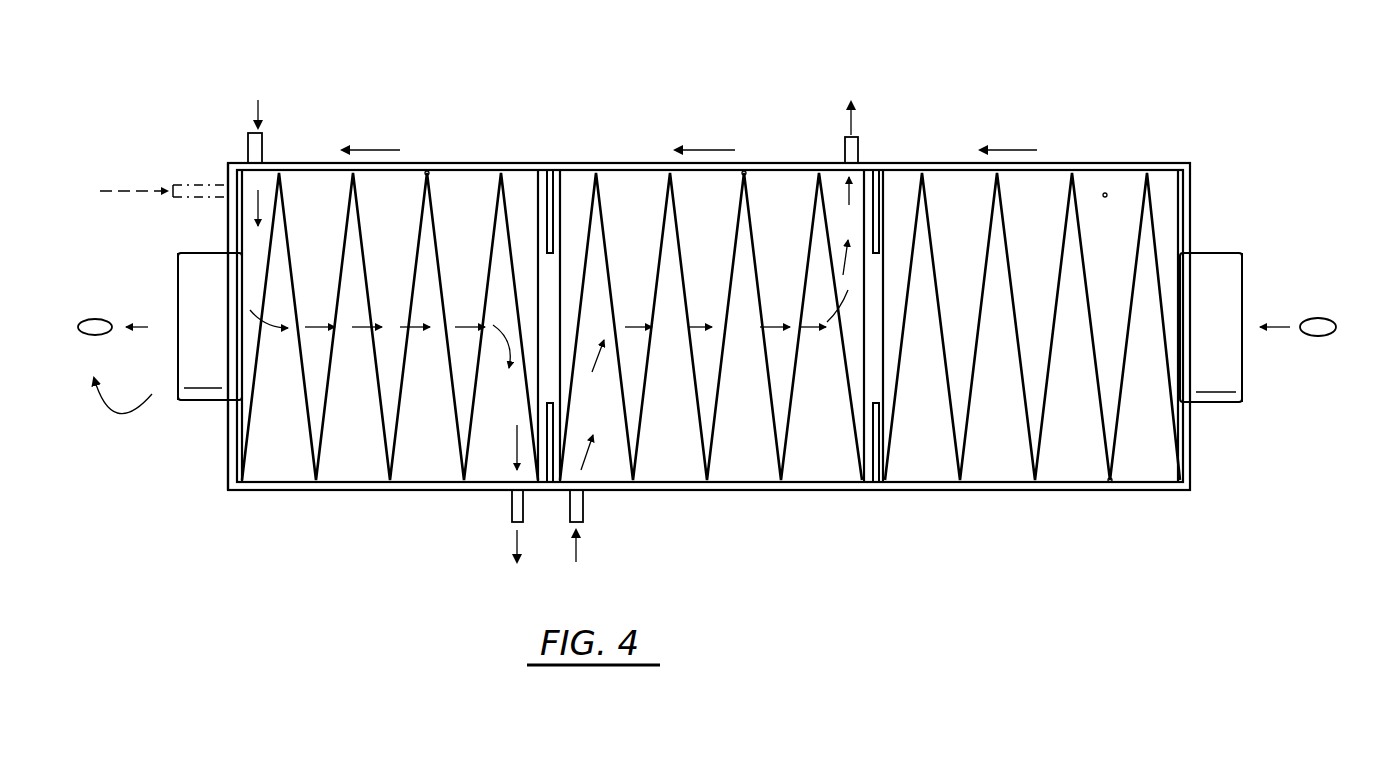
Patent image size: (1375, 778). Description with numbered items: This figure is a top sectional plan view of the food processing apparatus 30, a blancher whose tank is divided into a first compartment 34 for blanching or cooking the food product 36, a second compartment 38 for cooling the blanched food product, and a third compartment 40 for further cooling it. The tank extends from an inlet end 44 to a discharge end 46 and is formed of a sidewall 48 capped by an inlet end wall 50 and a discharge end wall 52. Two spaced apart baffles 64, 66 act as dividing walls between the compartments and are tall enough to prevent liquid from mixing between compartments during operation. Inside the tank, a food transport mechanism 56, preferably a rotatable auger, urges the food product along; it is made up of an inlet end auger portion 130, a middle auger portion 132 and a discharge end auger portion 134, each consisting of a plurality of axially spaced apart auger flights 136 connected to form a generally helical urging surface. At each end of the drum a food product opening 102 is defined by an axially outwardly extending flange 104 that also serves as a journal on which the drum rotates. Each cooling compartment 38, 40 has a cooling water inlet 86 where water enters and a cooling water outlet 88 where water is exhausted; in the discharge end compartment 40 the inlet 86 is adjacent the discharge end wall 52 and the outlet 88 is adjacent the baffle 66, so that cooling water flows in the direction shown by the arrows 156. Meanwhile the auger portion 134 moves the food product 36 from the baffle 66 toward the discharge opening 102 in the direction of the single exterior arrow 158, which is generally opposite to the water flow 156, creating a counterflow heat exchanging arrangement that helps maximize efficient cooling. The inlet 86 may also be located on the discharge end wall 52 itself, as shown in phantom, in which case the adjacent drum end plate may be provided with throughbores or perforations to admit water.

The food processing apparatus 30 is at (214, 126).
The first compartment 34 is at (1102, 126).
The food product 36 is at (98, 318).
The second compartment 38 is at (706, 512).
The third compartment 40 is at (345, 510).
The inlet end 44 is at (1264, 271).
The discharge end 46 is at (168, 255).
The sidewall 48 is at (948, 490).
The inlet end wall 50 is at (1192, 210).
The discharge end wall 52 is at (226, 467).
The food transport mechanism 56 is at (1108, 190).
The baffle 64 is at (877, 215).
The baffle 66 is at (553, 215).
The cooling water inlet 86 is at (102, 190).
The cooling water outlet 88 is at (845, 149).
The food product opening 102 is at (176, 397).
The flange 104 is at (232, 327).
The inlet end auger portion 130 is at (1054, 449).
The middle auger portion 132 is at (806, 450).
The discharge end auger portion 134 is at (414, 437).
The auger flights 136 is at (437, 193).
The arrows indicating cooling water flow direction 156 is at (380, 318).
The arrow indicating food product flow direction 158 is at (390, 150).